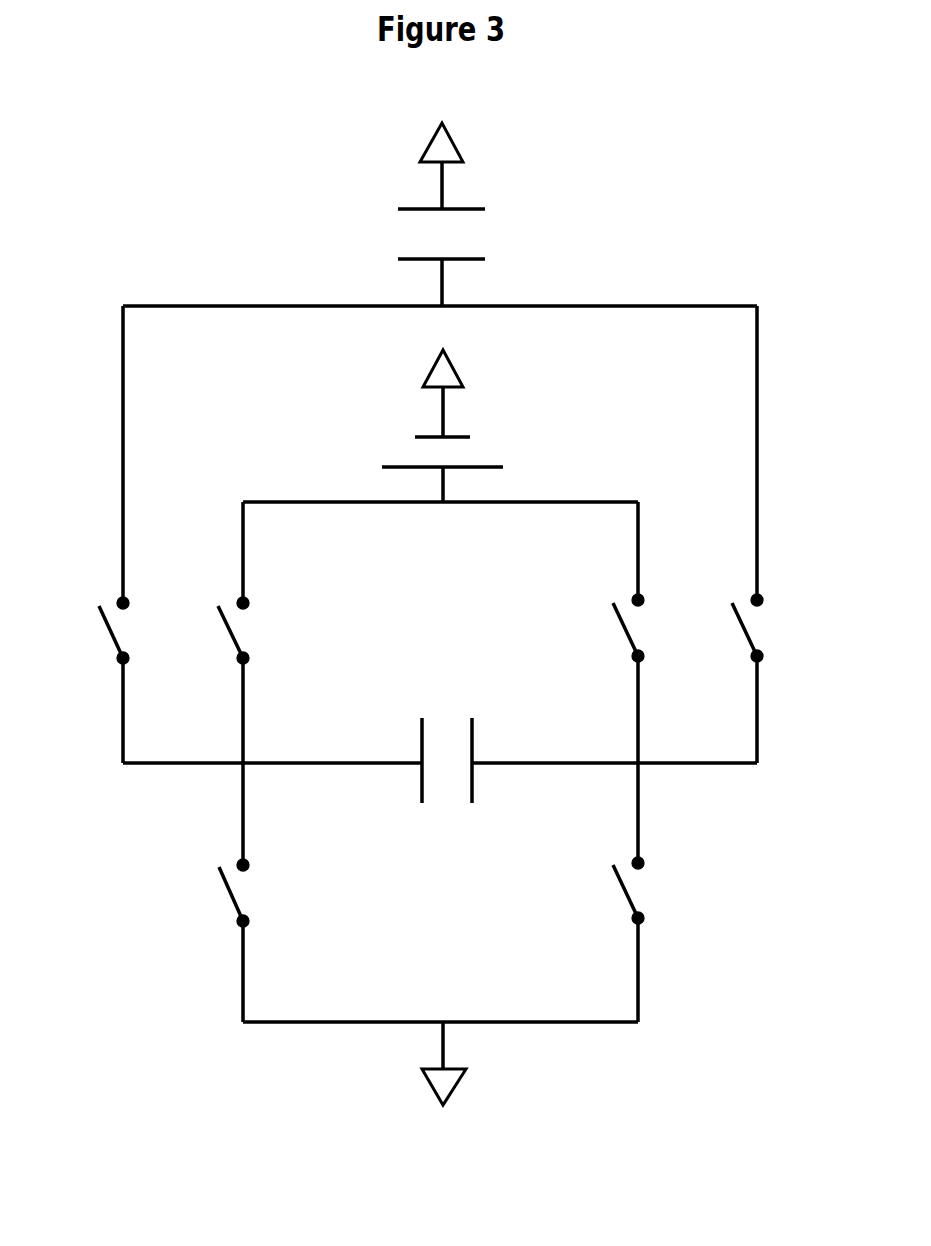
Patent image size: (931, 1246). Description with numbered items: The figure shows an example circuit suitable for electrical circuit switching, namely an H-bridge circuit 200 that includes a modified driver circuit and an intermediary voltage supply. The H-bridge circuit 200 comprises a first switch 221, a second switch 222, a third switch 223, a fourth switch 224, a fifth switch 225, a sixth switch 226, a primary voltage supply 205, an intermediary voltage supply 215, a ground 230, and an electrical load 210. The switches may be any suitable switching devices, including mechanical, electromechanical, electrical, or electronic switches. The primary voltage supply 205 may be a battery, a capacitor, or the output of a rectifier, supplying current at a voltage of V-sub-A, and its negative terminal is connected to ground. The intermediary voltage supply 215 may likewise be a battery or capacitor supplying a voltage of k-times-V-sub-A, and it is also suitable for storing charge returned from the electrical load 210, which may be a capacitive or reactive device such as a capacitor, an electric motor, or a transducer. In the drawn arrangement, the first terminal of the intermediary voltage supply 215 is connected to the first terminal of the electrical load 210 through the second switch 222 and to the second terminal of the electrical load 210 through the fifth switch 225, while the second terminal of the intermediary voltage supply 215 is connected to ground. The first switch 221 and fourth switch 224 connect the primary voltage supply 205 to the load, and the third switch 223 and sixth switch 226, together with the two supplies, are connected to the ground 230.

The H-bridge circuit 200 is at (138, 880).
The primary voltage supply 205 is at (405, 463).
The electrical load 210 is at (421, 802).
The intermediary voltage supply 215 is at (415, 207).
The first switch (S1) 221 is at (230, 640).
The second switch (S2) 222 is at (112, 640).
The third switch (S3) 223 is at (232, 903).
The fourth switch (S4) 224 is at (623, 637).
The fifth switch (S5) 225 is at (745, 637).
The sixth switch (S6) 226 is at (623, 900).
The ground 230 is at (429, 1085).